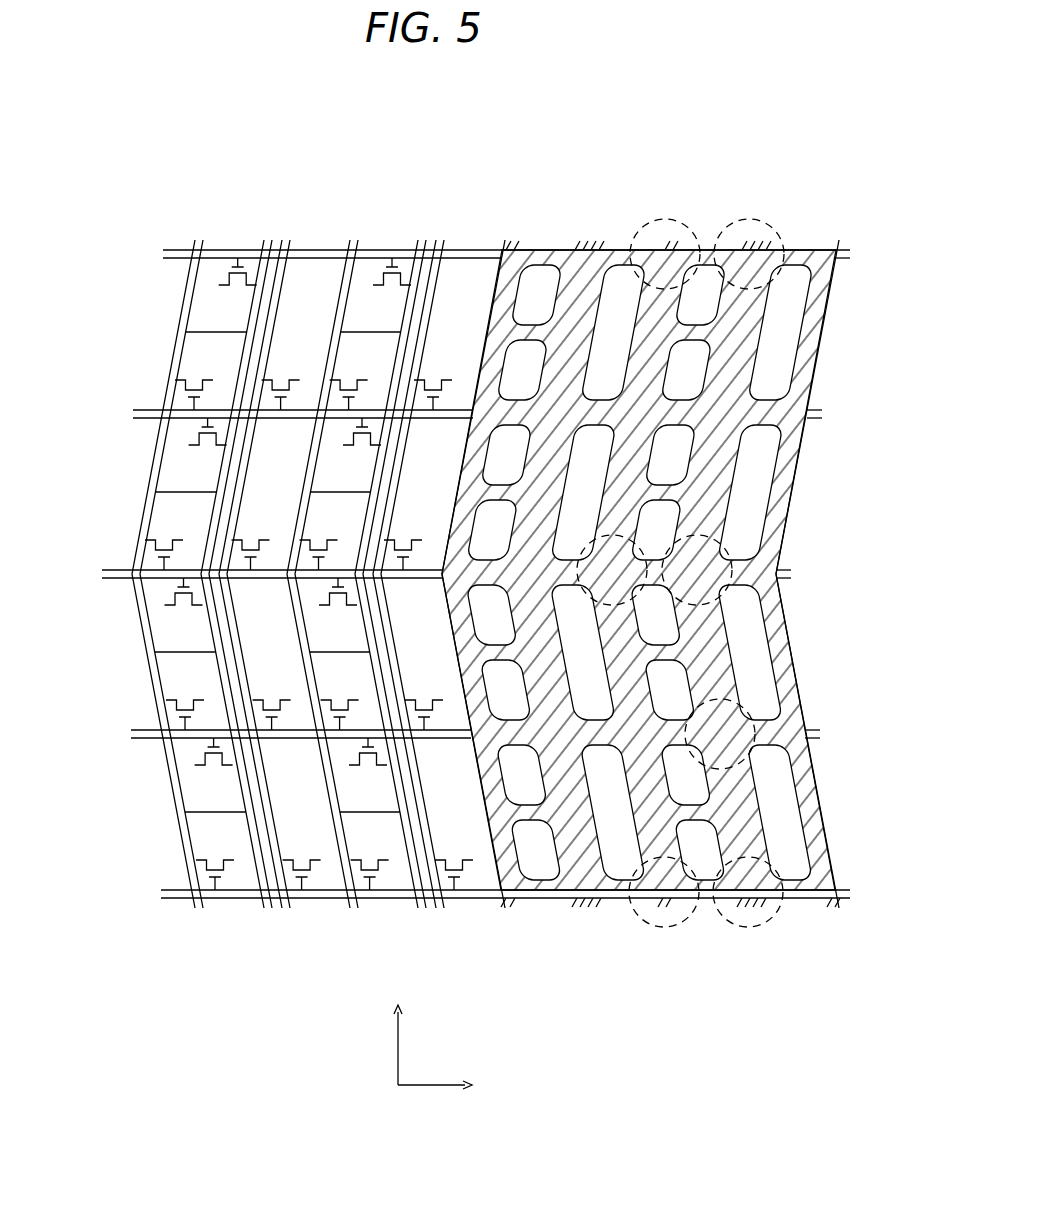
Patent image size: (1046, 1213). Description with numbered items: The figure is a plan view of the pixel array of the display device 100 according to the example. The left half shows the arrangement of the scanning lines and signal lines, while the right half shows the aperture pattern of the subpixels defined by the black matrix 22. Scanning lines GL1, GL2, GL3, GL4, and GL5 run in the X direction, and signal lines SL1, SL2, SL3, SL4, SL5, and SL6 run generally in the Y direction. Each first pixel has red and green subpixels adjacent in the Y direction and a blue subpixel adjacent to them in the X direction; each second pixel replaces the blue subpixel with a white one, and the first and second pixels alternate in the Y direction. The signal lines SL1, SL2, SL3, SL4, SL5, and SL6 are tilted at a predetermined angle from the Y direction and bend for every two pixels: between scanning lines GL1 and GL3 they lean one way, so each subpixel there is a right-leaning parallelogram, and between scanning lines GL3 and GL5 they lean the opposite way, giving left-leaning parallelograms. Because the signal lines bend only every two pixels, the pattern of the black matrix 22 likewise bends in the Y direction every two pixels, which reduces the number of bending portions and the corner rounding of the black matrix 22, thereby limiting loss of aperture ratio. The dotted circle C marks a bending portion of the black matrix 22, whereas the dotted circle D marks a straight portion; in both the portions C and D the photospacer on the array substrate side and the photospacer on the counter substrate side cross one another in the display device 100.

The display device 100 is at (428, 115).
The black matrix 22 is at (565, 256).
The signal line SL1 is at (197, 240).
The signal line SL2 is at (267, 240).
The signal line SL3 is at (285, 240).
The signal line SL4 is at (353, 240).
The signal line SL5 is at (421, 240).
The signal line SL6 is at (440, 240).
The scanning line GL1 is at (163, 254).
The scanning line GL2 is at (133, 414).
The scanning line GL3 is at (102, 574).
The scanning line GL4 is at (131, 734).
The scanning line GL5 is at (161, 894).
The dotted circle C is at (732, 572).
The dotted circle D is at (758, 731).